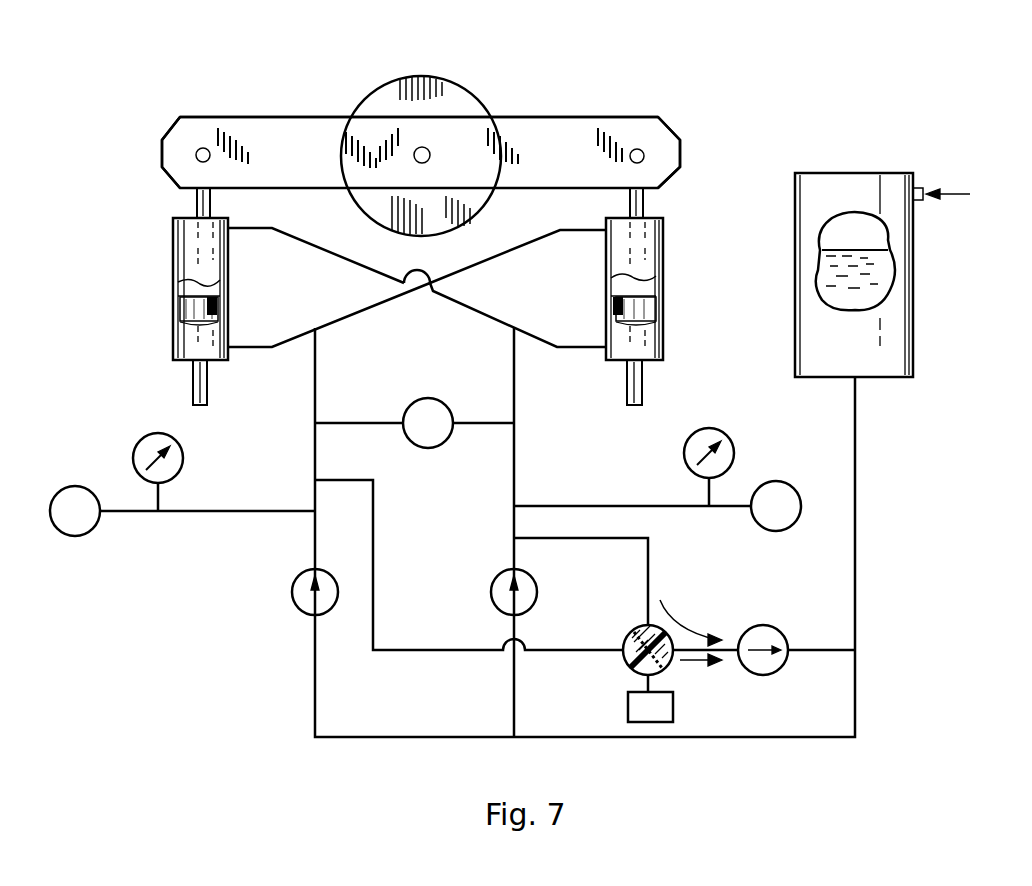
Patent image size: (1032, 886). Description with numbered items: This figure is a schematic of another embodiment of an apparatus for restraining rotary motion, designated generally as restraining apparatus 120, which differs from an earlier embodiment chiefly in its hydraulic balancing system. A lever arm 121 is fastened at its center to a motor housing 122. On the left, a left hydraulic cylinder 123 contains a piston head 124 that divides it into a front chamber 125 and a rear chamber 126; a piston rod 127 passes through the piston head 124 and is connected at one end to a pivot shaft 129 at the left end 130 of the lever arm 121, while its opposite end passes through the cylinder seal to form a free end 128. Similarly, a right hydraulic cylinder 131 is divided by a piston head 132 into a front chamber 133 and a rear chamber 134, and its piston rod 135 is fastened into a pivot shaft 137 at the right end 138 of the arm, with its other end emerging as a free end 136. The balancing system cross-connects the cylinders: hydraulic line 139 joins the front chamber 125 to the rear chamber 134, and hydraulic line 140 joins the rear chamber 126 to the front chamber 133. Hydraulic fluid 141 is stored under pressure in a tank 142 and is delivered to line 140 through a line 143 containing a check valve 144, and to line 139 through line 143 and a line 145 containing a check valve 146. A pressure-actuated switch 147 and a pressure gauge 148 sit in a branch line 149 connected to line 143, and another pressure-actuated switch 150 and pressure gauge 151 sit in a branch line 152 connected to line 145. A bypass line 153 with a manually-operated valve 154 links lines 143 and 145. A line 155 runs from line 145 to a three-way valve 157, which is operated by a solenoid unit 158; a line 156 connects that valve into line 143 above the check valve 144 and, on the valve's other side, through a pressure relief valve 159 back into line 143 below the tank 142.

The restraining apparatus 120 is at (124, 110).
The lever arm 121 is at (304, 117).
The motor housing 122 is at (457, 84).
The left hydraulic cylinder 123 is at (180, 246).
The piston head 124 is at (186, 314).
The front chamber 125 is at (175, 288).
The rear chamber 126 is at (218, 304).
The piston rod 127 is at (196, 206).
The free end 128 is at (188, 376).
The pivot shaft 129 is at (195, 155).
The left end 130 is at (168, 127).
The right hydraulic cylinder 131 is at (650, 252).
The piston head 132 is at (660, 282).
The front chamber 133 is at (622, 286).
The rear chamber 134 is at (648, 308).
The piston rod 135 is at (646, 204).
The free end 136 is at (646, 382).
The pivot shaft 137 is at (644, 152).
The right end 138 is at (682, 158).
The hydraulic line 139 is at (336, 252).
The hydraulic line 140 is at (502, 252).
The hydraulic fluid 141 is at (865, 292).
The tank 142 is at (870, 172).
The line 143 is at (308, 390).
The check valve 144 is at (296, 578).
The line 145 is at (512, 468).
The check valve 146 is at (538, 580).
The pressure-actuated switch 147 is at (88, 482).
The pressure gauge 148 is at (180, 448).
The branch line 149 is at (276, 508).
The pressure-actuated switch 150 is at (778, 482).
The pressure gauge 151 is at (728, 428).
The branch line 152 is at (570, 502).
The bypass line 153 is at (380, 420).
The manually-operated valve 154 is at (438, 398).
The line 155 is at (648, 562).
The line 156 is at (375, 590).
The 3-way valve 157 is at (628, 670).
The solenoid unit 158 is at (676, 705).
The pressure relief valve 159 is at (760, 626).